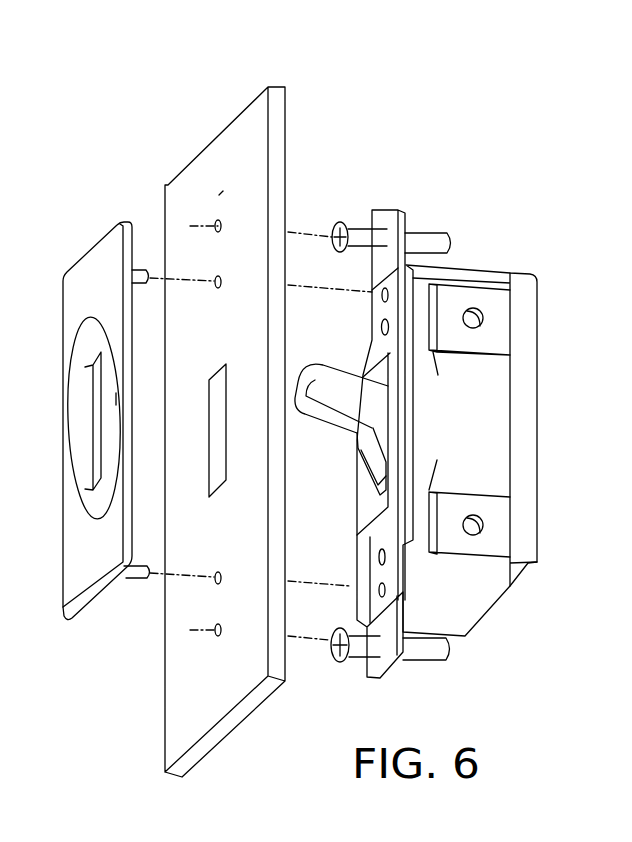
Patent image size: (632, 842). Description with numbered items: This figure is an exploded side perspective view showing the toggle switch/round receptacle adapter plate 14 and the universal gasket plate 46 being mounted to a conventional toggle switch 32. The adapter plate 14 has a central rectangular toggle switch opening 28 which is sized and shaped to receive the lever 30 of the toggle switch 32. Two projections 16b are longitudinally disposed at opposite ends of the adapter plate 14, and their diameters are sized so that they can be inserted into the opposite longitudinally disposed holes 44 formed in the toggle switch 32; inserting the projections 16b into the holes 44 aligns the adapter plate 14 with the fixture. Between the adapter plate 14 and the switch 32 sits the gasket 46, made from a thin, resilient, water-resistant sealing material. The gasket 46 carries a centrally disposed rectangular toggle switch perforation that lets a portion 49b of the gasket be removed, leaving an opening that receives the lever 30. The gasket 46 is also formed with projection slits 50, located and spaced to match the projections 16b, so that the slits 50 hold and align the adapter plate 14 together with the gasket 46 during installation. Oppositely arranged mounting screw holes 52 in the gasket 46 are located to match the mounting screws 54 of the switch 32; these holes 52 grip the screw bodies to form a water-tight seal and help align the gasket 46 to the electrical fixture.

The toggle switch/round receptacle adapter plate 14 is at (80, 582).
The projections 16b is at (147, 268).
The toggle switch opening 28 is at (90, 404).
The lever 30 is at (323, 390).
The toggle switch 32 is at (527, 438).
The holes 44 is at (388, 294).
The universal gasket plate 46 is at (287, 100).
The removable gasket portion 49b is at (228, 395).
The projection slits 50 is at (218, 281).
The mounting screw holes 52 is at (218, 224).
The mounting screws 54 is at (435, 421).